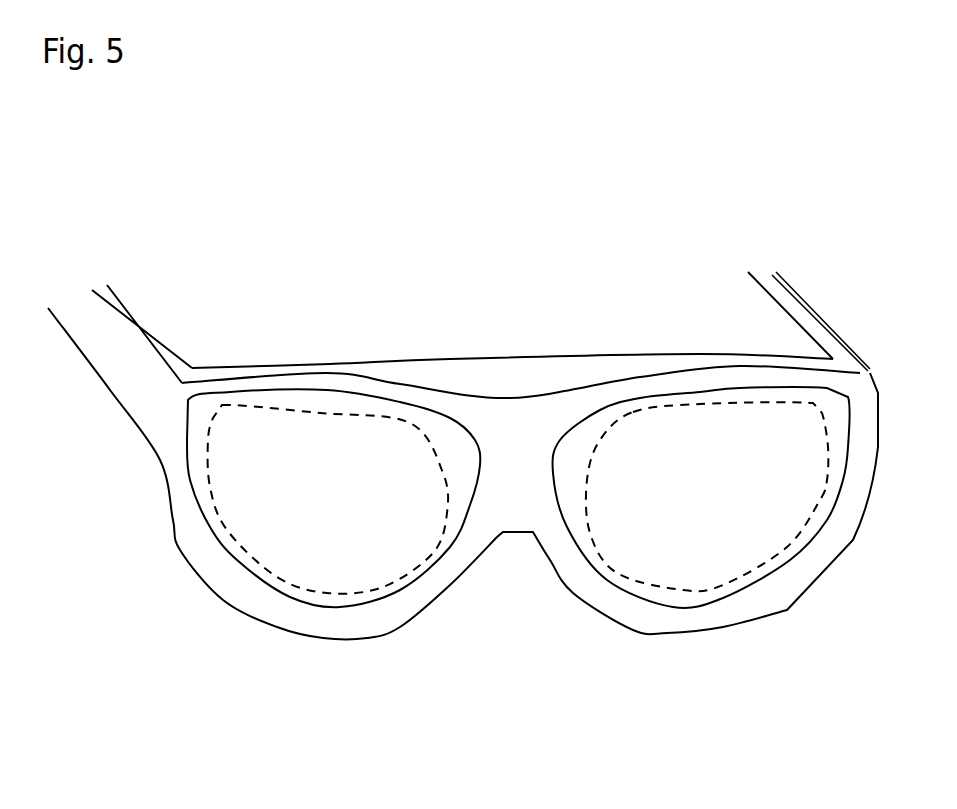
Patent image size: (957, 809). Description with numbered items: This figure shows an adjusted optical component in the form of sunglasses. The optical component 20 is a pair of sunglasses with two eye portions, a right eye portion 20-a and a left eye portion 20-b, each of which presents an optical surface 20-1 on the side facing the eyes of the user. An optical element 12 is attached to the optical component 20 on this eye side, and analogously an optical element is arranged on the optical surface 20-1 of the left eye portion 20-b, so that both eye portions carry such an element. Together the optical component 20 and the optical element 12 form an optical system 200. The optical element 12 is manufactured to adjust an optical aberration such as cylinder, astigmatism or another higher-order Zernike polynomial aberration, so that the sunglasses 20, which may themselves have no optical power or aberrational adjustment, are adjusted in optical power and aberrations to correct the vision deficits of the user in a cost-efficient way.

The optical system 200 is at (275, 325).
The optical component 20 is at (167, 583).
The optical surface 20-1 is at (468, 467).
The right eye portion 20-a is at (333, 568).
The left eye portion 20-b is at (683, 559).
The optical element 12 is at (252, 492).